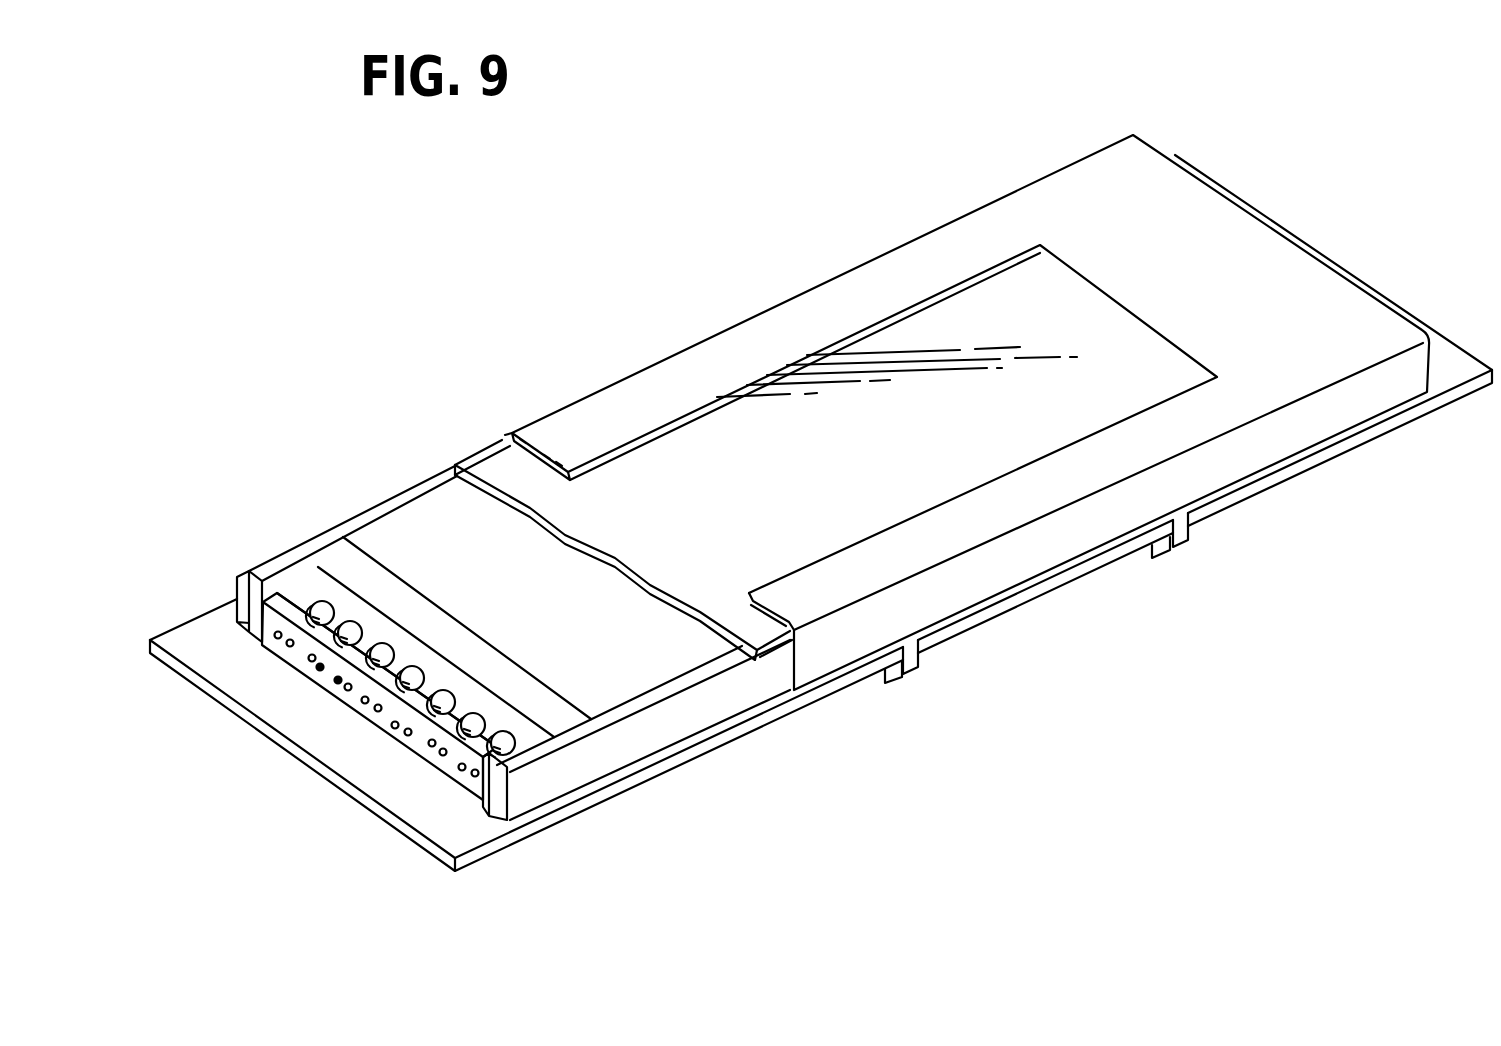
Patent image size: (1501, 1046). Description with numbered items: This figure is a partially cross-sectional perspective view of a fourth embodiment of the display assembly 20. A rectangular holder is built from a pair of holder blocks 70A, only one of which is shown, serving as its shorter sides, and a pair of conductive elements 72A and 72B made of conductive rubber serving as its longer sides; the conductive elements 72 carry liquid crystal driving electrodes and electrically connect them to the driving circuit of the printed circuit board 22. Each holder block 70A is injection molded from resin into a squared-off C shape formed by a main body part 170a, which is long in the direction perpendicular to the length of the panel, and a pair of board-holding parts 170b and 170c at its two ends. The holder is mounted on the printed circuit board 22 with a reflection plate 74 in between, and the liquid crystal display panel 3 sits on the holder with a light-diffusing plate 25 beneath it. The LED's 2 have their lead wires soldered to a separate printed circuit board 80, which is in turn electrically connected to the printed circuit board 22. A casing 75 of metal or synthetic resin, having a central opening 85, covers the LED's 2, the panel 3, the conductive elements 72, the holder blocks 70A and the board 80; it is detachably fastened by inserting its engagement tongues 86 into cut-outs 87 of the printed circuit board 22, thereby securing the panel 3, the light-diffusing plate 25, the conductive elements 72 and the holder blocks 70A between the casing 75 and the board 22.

The image reading apparatus 20 is at (643, 296).
The printed circuit board 22 is at (207, 692).
The conductive elements 72 is at (456, 620).
The conductive element 72A is at (683, 720).
The conductive element 72B is at (363, 528).
The main body part 170a is at (486, 653).
The board-holding part 170b is at (233, 605).
The board-holding part 170c is at (490, 818).
The reflection plate 74 is at (454, 539).
The holder block 70A is at (497, 503).
The printed circuit board 80 is at (353, 638).
The LED's 2 is at (310, 597).
The liquid crystal display panel 3 is at (640, 556).
The light-diffusing plate 25 is at (707, 628).
The casing 75 is at (967, 412).
The opening 85 is at (1005, 272).
The engagement tongues 86 is at (894, 684).
The cut-outs 87 is at (920, 664).